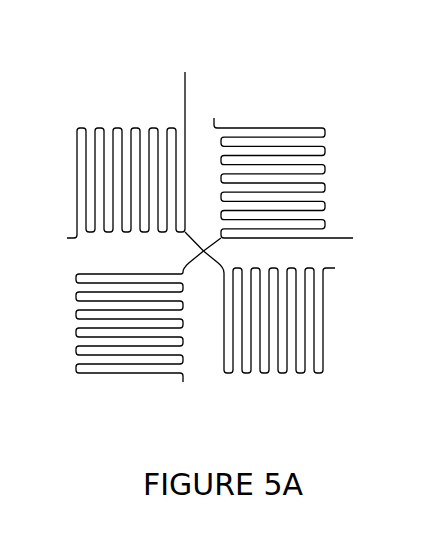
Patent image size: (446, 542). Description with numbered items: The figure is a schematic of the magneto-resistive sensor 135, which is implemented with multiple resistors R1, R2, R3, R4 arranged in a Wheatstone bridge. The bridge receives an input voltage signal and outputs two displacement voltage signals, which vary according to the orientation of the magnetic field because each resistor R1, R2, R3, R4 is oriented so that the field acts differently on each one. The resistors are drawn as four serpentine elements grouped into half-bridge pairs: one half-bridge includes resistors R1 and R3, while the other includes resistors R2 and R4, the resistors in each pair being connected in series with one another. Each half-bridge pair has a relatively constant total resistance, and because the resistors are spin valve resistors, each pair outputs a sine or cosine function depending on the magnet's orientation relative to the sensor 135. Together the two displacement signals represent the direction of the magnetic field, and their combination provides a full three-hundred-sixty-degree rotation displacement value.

The sensor 135 is at (228, 34).
The resistor R1 is at (140, 324).
The resistor R2 is at (277, 312).
The resistor R3 is at (279, 184).
The resistor R4 is at (128, 161).